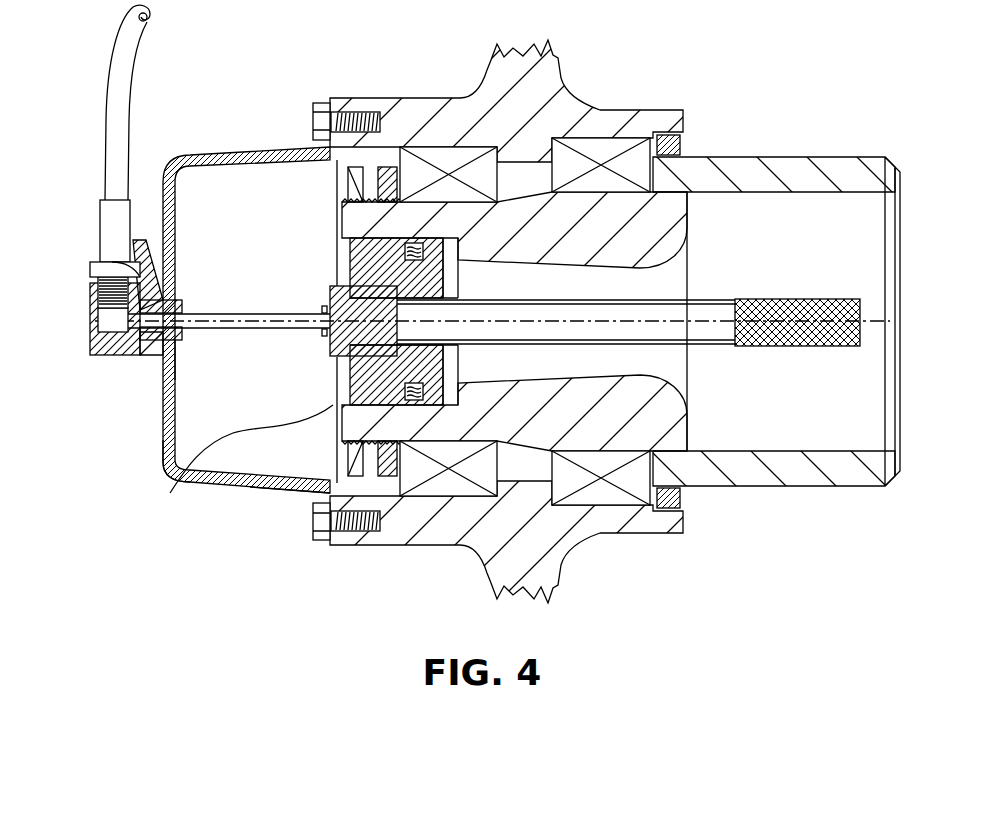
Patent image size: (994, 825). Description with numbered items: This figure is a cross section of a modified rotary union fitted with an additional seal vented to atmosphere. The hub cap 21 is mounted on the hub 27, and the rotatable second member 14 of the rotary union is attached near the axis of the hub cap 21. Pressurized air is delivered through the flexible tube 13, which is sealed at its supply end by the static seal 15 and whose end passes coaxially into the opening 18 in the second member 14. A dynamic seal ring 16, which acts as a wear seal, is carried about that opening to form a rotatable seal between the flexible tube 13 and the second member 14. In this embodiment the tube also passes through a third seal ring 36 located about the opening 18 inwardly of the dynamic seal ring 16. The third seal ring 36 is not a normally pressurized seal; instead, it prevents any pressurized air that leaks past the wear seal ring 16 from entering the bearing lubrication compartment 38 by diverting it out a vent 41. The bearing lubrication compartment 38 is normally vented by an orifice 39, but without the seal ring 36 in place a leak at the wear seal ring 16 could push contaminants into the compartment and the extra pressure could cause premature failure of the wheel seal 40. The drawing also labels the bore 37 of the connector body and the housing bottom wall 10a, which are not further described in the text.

The housing bottom wall 10a is at (310, 497).
The flexible tube 13 is at (265, 313).
The second member 14 is at (97, 287).
The static seal 15 is at (234, 461).
The dynamic seal ring 16 is at (90, 350).
The opening 18 is at (100, 266).
The hub cap 21 is at (163, 463).
The hub 27 is at (400, 97).
The third seal ring 36 is at (133, 240).
The bore 37 is at (110, 315).
The bearing lubrication compartment 38 is at (287, 217).
The orifice 39 is at (163, 360).
The wheel seal 40 is at (683, 143).
The vent 41 is at (142, 355).